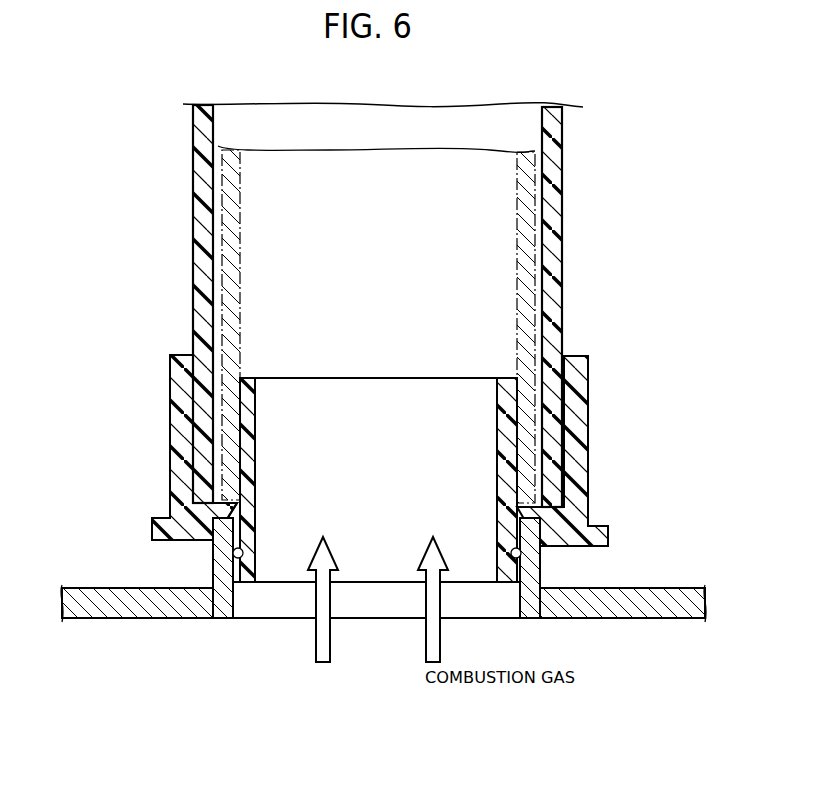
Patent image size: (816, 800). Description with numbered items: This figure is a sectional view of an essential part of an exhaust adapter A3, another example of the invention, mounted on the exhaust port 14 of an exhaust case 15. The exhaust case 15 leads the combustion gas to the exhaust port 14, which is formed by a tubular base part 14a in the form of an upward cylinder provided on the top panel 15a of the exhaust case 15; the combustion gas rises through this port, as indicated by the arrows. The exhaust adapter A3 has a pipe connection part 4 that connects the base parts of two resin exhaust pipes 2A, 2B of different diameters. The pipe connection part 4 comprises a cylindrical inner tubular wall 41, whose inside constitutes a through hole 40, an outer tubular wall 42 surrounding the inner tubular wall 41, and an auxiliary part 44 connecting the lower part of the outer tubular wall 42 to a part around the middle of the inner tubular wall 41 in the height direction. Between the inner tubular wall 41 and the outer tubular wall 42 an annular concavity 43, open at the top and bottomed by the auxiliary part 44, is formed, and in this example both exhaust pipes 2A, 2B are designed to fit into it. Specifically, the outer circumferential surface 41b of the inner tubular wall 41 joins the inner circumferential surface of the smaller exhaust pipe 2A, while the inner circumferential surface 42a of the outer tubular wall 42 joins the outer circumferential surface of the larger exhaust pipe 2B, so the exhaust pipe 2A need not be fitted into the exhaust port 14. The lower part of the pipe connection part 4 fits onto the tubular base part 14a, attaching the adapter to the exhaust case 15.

The exhaust pipe 2A is at (244, 211).
The exhaust pipe 2B is at (207, 214).
The pipe connection part 4 is at (167, 419).
The through hole 40 is at (320, 398).
The inner tubular wall 41 is at (378, 453).
The outer circumferential surface of the inner tubular wall 41b is at (240, 474).
The outer tubular wall 42 is at (183, 372).
The inner circumferential surface of the outer tubular wall 42a is at (181, 413).
The annular concavity 43 is at (222, 478).
The auxiliary part 44 is at (224, 513).
The exhaust port 14 is at (357, 608).
The tubular base part 14a is at (223, 563).
The exhaust case 15 is at (371, 575).
The top panel 15a is at (135, 588).
The exhaust adapter A3 is at (590, 347).